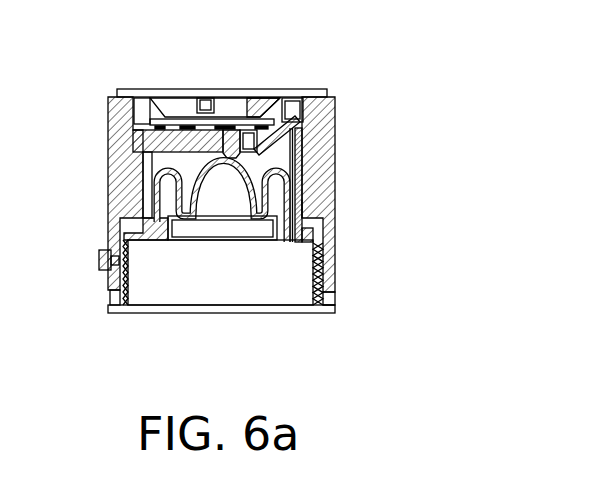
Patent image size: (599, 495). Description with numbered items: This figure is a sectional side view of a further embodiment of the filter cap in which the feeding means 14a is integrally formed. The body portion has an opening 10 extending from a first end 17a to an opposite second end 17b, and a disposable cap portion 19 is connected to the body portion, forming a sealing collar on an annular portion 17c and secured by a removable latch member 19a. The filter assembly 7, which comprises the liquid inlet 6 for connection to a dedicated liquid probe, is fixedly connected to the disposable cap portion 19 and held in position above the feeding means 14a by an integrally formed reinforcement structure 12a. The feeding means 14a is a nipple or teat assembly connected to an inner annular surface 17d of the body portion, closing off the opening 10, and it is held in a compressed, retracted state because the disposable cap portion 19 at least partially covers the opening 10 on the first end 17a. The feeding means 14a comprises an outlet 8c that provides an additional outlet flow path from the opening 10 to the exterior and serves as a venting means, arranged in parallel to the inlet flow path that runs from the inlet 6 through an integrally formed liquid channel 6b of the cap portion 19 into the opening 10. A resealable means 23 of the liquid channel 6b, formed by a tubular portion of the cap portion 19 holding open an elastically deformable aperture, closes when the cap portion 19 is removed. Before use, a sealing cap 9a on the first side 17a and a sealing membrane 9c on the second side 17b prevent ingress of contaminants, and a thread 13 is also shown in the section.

The sealing cap 9a is at (158, 88).
The liquid inlet 6 is at (204, 98).
The filter assembly 7 is at (232, 98).
The reinforcement structure 12a is at (157, 138).
The first end of the body portion 17a is at (140, 162).
The annular portion of the body portion 17c is at (135, 176).
The inner annular surface of the body portion 17d is at (157, 200).
The disposable cap portion 19 is at (325, 135).
The liquid channel 6b is at (308, 178).
The feeding means 14a is at (306, 211).
The removable latch member 19a is at (99, 258).
The thread 13 is at (330, 273).
The opening 10 is at (170, 275).
The outlet 8c is at (214, 161).
The sealing membrane 9c is at (270, 314).
The resealable means 23 is at (297, 236).
The second end of the body portion 17b is at (330, 310).